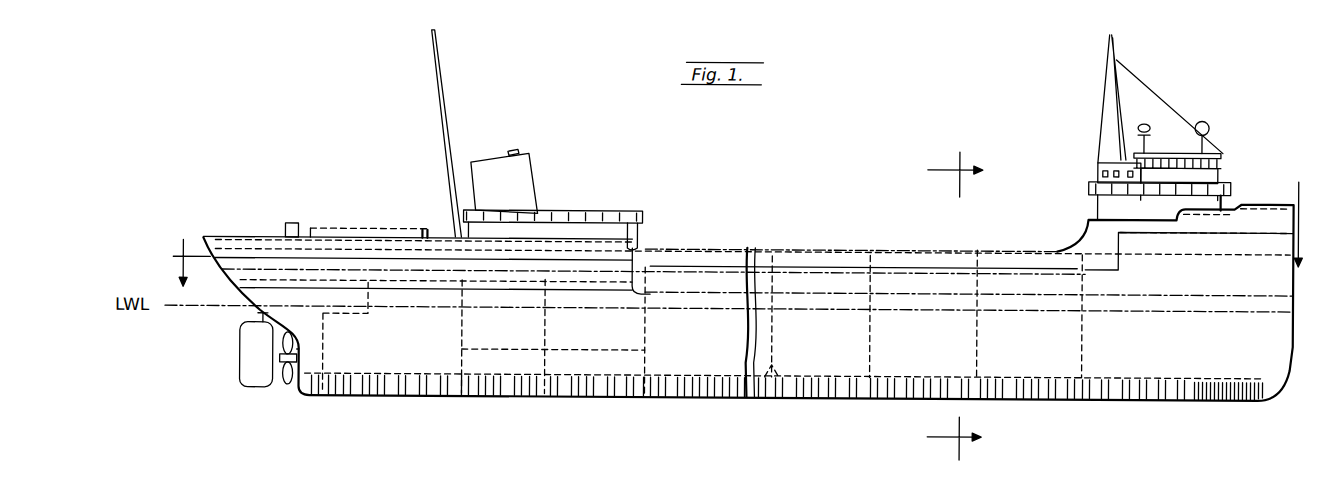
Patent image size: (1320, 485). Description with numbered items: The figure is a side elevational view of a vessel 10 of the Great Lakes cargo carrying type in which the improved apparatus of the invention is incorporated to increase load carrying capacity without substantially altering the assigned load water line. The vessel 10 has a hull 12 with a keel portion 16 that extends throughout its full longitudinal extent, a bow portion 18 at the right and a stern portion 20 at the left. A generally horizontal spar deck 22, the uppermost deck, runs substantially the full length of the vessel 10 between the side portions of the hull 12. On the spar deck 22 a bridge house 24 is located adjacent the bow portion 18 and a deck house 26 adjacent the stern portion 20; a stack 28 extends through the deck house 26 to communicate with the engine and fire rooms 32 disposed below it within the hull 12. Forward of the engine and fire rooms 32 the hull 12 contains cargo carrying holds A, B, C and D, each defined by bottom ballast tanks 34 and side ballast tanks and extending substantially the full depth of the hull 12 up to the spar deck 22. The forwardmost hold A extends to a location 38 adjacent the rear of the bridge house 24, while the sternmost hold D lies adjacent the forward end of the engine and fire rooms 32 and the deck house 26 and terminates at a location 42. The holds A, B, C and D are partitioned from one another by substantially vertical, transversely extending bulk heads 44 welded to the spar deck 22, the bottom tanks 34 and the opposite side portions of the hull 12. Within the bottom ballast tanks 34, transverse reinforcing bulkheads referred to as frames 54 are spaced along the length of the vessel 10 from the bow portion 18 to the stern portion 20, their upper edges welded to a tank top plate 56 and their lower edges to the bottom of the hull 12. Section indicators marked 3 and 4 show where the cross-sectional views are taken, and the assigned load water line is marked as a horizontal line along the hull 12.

The vessel 10 is at (747, 233).
The hull 12 is at (895, 234).
The keel portion 16 is at (1093, 395).
The bow portion 18 is at (1248, 211).
The stern portion 20 is at (270, 237).
The spar deck 22 is at (978, 246).
The bridge house 24 is at (1228, 181).
The deck house 26 is at (557, 228).
The stack 28 is at (533, 199).
The engine and fire rooms 32 is at (502, 345).
The bottom ballast tanks 34 is at (865, 381).
The location 38 is at (1080, 263).
The location 42 is at (643, 248).
The bulk heads 44 is at (647, 335).
The frames 54 is at (681, 388).
The tank top plate 56 is at (667, 373).
The section line 3- 3 is at (954, 305).
The section line 4- 4 is at (735, 234).
The cargo carrying hold A is at (1000, 286).
The cargo carrying hold B is at (940, 299).
The cargo carrying hold C is at (812, 300).
The cargo carrying hold D is at (682, 300).